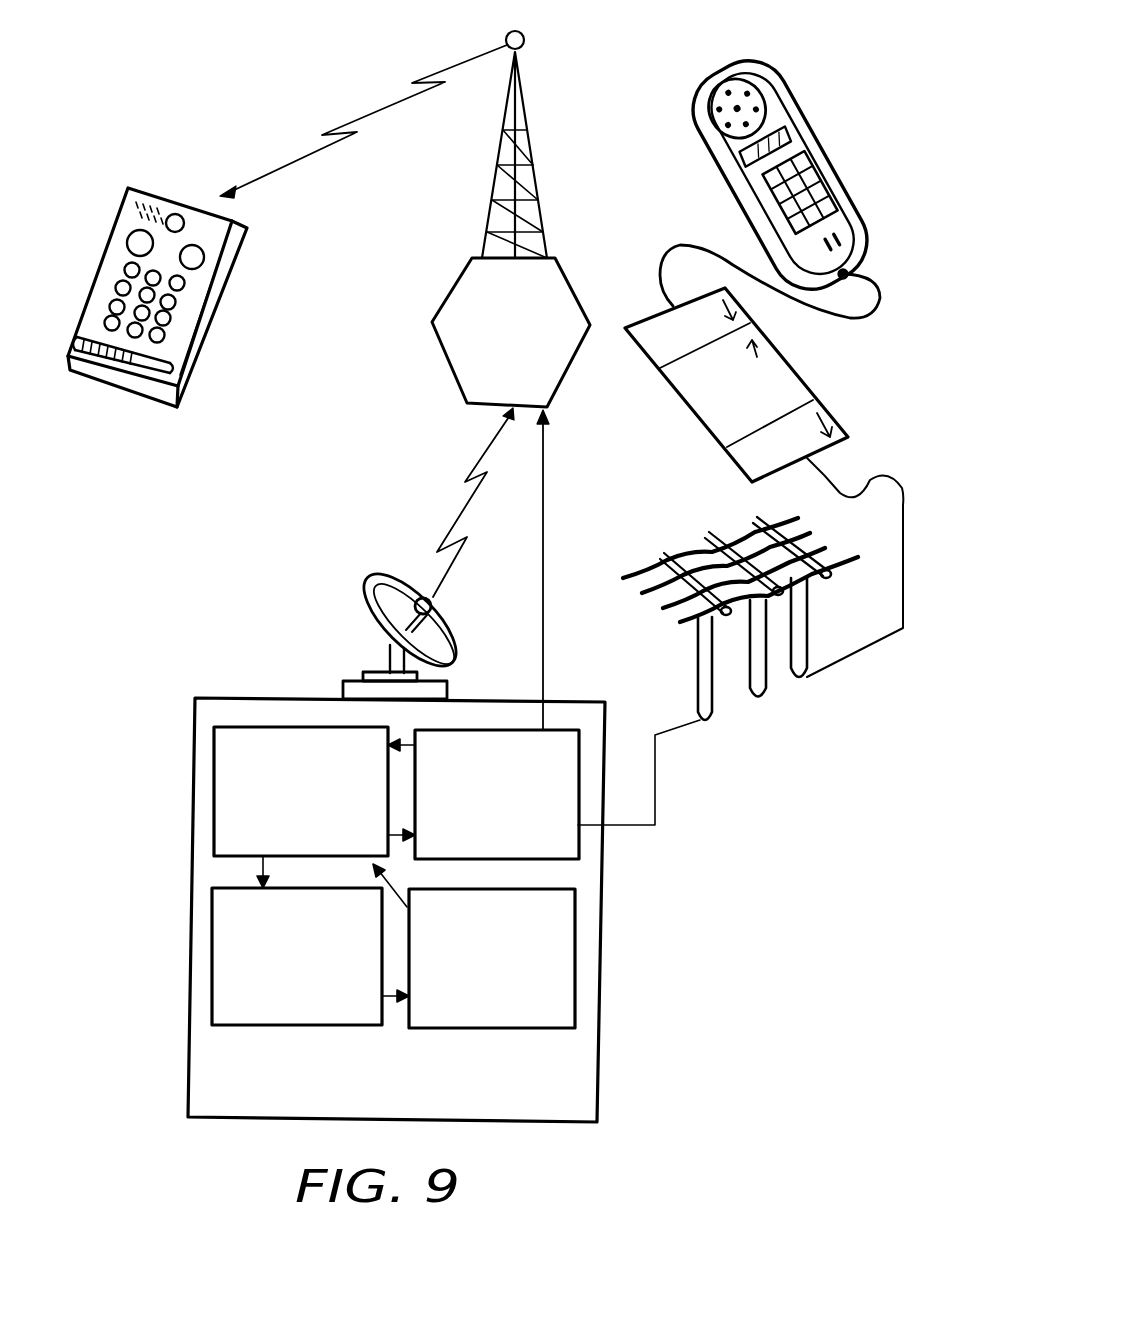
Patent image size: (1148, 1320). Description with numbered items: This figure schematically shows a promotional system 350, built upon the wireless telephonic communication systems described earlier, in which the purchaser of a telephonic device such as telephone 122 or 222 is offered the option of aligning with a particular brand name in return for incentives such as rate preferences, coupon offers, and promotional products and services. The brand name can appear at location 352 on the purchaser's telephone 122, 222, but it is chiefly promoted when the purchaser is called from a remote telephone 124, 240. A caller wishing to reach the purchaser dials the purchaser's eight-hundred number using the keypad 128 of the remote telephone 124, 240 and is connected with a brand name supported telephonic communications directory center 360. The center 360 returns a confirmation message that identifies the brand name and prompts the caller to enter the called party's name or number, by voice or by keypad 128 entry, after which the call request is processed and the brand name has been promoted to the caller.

The system 350 is at (283, 498).
The brand name location on telephone 352 is at (150, 200).
The telephone 122 is at (202, 297).
The telephone 222 is at (198, 346).
The remote telephone 124 is at (825, 152).
The remote telephone 240 is at (810, 152).
The keypad 128 is at (822, 183).
The brand name supported telephonic communications directory center 360 is at (195, 806).